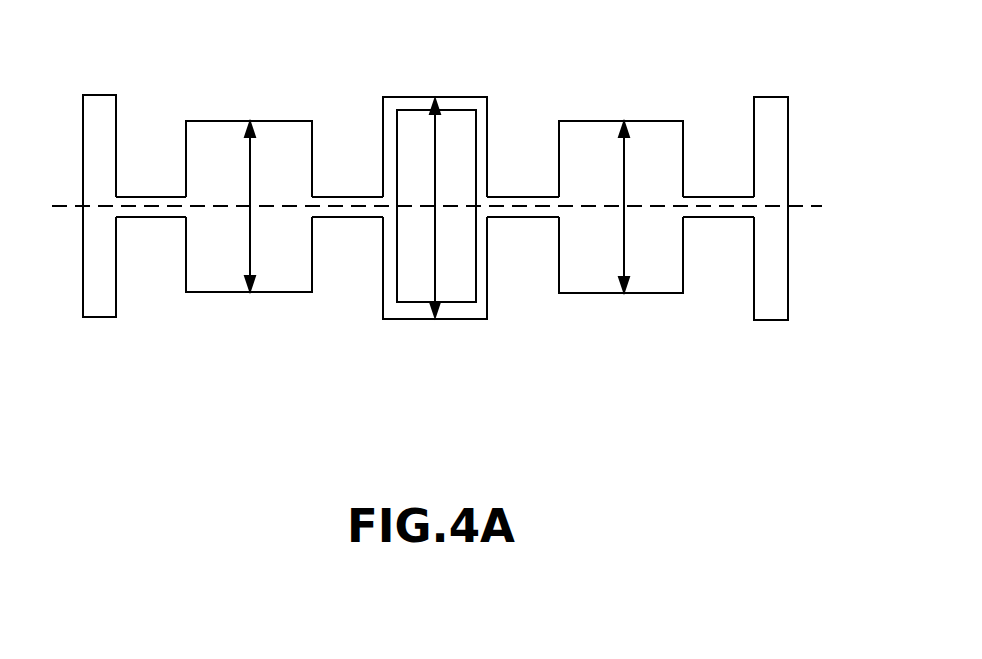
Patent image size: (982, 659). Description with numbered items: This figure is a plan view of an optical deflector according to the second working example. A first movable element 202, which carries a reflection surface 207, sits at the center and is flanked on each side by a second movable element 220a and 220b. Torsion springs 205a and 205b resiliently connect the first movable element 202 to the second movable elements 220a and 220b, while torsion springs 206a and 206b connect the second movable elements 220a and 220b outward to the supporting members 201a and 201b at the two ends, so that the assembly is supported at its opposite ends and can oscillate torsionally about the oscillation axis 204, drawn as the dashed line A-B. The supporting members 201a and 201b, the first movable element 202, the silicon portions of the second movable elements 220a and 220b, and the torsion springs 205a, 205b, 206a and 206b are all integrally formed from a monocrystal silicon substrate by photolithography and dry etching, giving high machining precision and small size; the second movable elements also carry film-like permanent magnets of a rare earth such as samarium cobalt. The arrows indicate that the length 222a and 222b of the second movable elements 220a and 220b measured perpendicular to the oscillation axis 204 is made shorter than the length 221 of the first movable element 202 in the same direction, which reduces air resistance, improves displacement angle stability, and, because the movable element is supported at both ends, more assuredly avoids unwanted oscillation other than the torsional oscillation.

The supporting member 201a is at (93, 110).
The supporting member 201b is at (775, 310).
The first movable element 202 is at (418, 316).
The oscillation axis 204 is at (793, 204).
The torsion spring 205a is at (350, 217).
The torsion spring 205b is at (528, 217).
The torsion spring 206a is at (148, 217).
The torsion spring 206b is at (708, 198).
The reflection surface 207 is at (412, 132).
The second movable element 220a is at (200, 130).
The second movable element 220b is at (650, 128).
The length of first movable element 221 is at (437, 150).
The length of second movable element 222a is at (253, 165).
The length of second movable element 222b is at (620, 165).